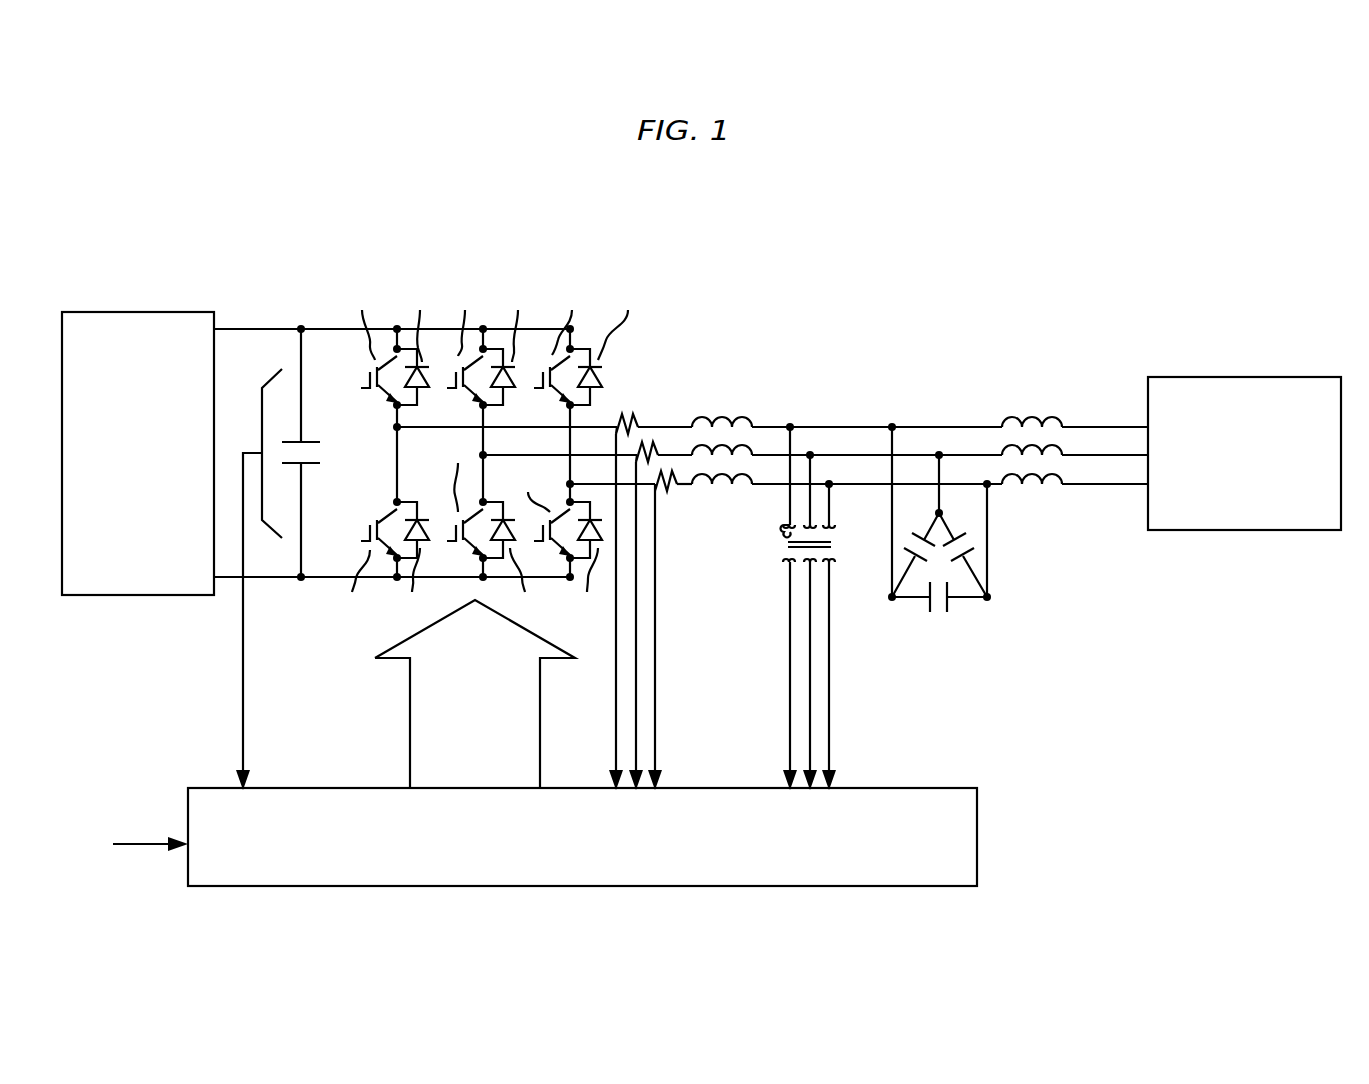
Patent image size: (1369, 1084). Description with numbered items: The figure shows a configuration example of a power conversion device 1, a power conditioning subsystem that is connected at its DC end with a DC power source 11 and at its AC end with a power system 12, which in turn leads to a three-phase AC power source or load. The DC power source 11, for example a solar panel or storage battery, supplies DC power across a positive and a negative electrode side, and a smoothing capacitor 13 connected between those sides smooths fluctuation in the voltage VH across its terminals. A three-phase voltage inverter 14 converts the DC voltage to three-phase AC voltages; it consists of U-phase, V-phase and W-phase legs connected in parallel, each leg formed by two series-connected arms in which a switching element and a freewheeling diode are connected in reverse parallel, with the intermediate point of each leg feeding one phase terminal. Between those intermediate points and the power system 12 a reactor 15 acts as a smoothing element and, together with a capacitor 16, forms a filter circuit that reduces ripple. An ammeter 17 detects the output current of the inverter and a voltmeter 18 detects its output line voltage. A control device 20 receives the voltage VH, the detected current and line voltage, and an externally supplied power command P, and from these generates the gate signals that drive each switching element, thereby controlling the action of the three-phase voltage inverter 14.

The power conversion device 1 is at (988, 302).
The DC power source 11 is at (143, 312).
The power system 12 is at (1233, 377).
The smoothing capacitor 13 is at (318, 455).
The three-phase voltage inverter 14 is at (552, 266).
The reactor 15 is at (736, 400).
The capacitor 16 is at (1010, 597).
The ammeter 17 is at (656, 404).
The voltmeter 18 is at (790, 550).
The control device 20 is at (978, 838).